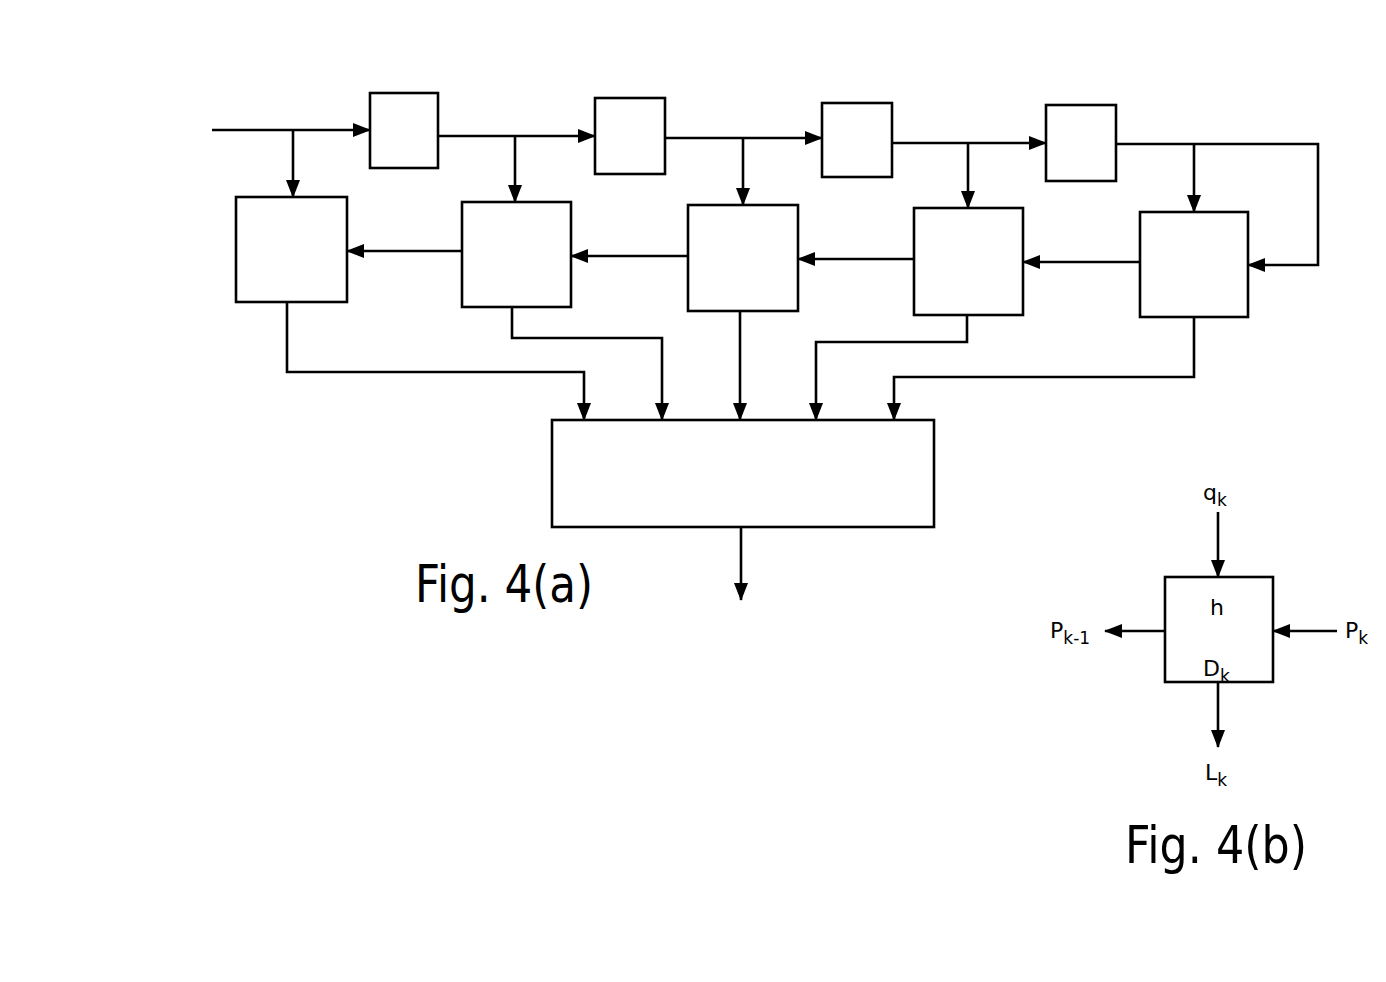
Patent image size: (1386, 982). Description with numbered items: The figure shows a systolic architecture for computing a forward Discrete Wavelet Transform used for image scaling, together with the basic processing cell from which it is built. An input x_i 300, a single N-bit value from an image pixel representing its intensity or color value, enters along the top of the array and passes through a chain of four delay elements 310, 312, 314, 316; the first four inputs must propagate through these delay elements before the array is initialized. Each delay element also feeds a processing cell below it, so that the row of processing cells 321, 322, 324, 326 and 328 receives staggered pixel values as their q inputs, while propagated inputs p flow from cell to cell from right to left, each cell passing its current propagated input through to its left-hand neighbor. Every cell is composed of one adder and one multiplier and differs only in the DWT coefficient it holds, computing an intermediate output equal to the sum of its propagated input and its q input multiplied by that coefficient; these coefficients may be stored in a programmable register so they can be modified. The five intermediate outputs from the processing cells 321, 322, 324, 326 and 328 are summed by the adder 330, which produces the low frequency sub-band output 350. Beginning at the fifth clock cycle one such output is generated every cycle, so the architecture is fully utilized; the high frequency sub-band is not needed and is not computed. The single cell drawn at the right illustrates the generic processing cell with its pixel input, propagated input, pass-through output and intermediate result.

The input x_i 300 is at (255, 129).
The delay element 310 is at (403, 93).
The delay element 312 is at (628, 98).
The delay element 314 is at (856, 103).
The delay element 316 is at (1078, 105).
The processing cell D_0 321 is at (251, 305).
The processing cell D_1 322 is at (480, 310).
The processing cell D_2 324 is at (772, 315).
The processing cell D_3 326 is at (1000, 318).
The processing cell D_4 328 is at (1226, 320).
The adder 330 is at (934, 482).
The LFS output a_(i-4) 350 is at (748, 563).